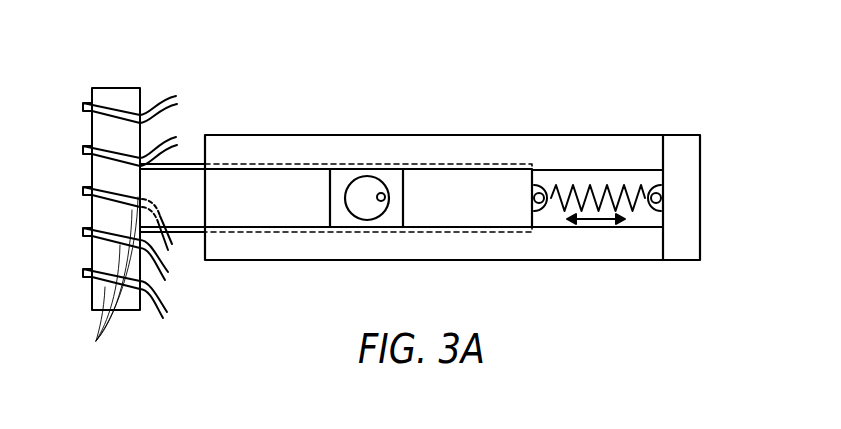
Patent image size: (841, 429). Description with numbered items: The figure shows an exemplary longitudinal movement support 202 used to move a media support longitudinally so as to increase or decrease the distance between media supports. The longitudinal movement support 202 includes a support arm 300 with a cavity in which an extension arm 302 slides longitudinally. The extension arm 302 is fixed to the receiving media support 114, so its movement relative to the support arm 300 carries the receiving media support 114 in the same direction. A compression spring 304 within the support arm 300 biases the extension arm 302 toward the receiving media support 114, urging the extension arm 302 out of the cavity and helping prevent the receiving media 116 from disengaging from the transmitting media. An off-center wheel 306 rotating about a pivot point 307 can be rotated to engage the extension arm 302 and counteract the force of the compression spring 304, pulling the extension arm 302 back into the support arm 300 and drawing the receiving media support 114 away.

The receiving media support 114 is at (120, 97).
The receiving media 116 is at (99, 284).
The longitudinal movement support 202 is at (420, 162).
The support arm 300 is at (594, 250).
The extension arm 302 is at (258, 187).
The compression spring 304 is at (580, 183).
The off-center wheel 306 is at (363, 173).
The pivot point 307 is at (386, 200).